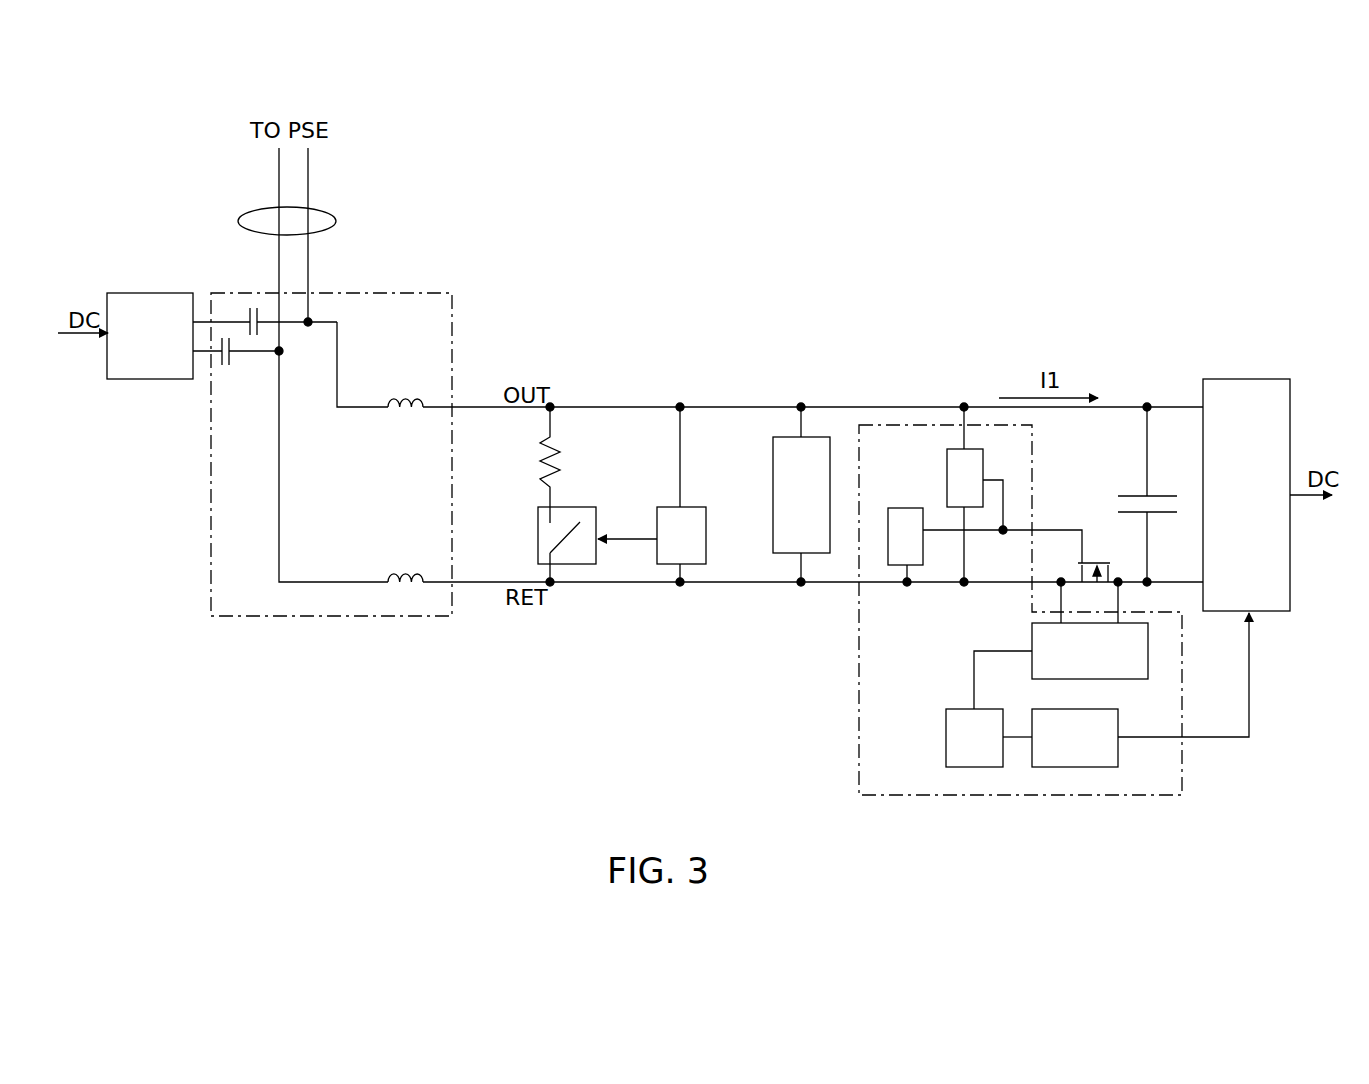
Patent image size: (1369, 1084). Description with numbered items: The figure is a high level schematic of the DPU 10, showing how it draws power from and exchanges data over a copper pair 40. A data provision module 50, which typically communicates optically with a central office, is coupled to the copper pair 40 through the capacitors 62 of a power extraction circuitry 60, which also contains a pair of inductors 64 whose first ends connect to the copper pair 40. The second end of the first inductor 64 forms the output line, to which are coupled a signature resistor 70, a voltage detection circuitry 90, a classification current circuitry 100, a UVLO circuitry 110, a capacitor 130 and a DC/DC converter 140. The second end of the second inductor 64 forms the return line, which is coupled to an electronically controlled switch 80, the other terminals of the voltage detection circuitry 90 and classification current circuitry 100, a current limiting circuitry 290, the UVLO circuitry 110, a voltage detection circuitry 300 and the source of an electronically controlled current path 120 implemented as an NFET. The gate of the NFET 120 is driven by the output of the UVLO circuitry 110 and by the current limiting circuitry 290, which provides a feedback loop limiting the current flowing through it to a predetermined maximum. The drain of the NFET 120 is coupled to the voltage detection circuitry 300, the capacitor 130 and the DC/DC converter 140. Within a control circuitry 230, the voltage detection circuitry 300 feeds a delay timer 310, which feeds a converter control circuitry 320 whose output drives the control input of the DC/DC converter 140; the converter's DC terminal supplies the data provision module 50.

The powered device circuit 10 is at (616, 638).
The copper pair 40 is at (325, 195).
The data provision module 50 is at (163, 382).
The power extraction circuitry 60 is at (423, 292).
The capacitors 62 is at (254, 303).
The inductors 64 is at (417, 392).
The signature resistor 70 is at (563, 467).
The electronically controlled switch 80 is at (576, 565).
The voltage detection circuitry 90 is at (692, 565).
The classification current circuitry 100 is at (793, 436).
The UVLO circuitry 110 is at (956, 447).
The electronically controlled current path 120 is at (1075, 569).
The capacitor 130 is at (1137, 492).
The DC/DC converter 140 is at (1263, 379).
The control circuitry 230 is at (859, 708).
The current limiting circuitry 290 is at (925, 545).
The voltage detection circuitry 300 is at (1147, 657).
The delay timer 310 is at (946, 732).
The converter control circuitry 320 is at (1118, 749).